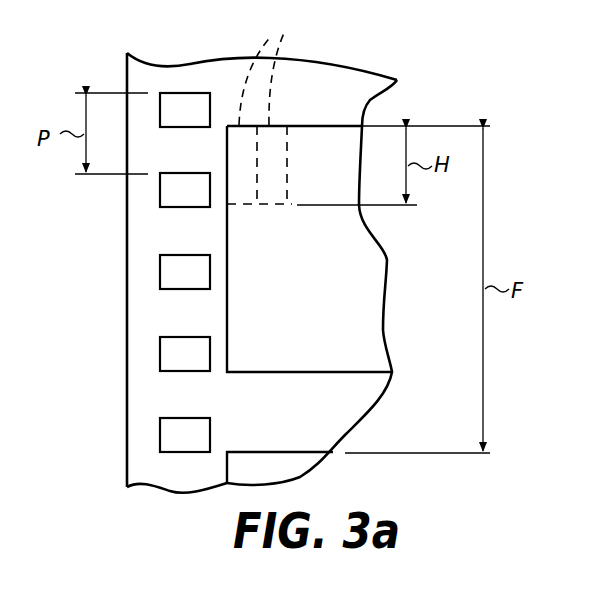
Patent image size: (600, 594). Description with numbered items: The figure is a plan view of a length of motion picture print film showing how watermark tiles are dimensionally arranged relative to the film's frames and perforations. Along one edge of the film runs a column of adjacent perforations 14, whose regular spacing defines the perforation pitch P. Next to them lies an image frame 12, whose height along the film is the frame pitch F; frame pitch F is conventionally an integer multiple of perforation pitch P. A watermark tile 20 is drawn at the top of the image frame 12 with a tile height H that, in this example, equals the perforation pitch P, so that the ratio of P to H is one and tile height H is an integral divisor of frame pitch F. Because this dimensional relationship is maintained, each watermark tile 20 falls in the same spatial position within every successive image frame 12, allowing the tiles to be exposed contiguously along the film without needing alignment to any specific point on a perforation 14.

The image frame 12 is at (298, 452).
The perforations 14 is at (160, 188).
The watermark tile 20 is at (270, 115).